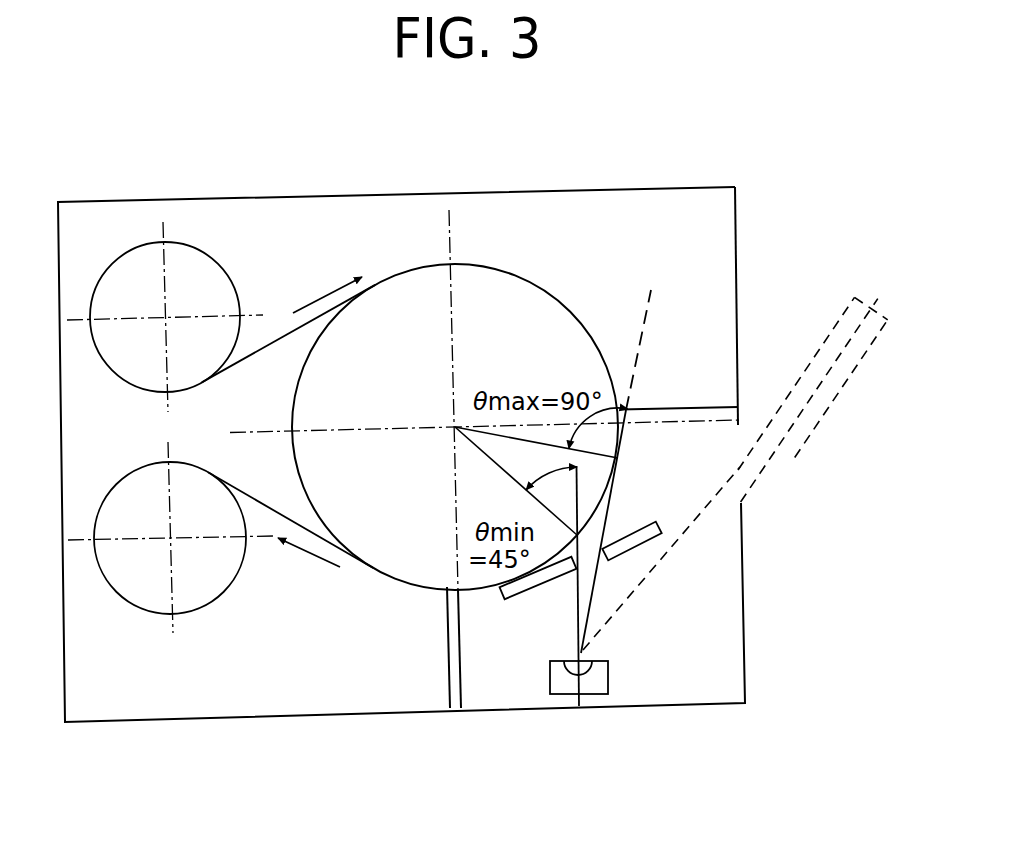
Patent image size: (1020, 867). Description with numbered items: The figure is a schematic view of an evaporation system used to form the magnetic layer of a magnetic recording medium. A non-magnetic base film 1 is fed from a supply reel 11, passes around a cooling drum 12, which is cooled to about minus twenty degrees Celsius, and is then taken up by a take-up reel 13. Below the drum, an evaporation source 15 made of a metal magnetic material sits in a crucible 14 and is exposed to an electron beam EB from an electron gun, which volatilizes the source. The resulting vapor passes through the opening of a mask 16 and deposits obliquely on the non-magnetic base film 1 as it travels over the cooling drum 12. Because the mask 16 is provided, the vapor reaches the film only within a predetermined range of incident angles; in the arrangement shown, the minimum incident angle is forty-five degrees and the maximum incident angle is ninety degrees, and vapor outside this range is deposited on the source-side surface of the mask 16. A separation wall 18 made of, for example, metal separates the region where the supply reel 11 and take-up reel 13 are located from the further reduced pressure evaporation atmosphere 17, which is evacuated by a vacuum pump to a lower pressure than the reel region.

The non-magnetic base film 1 is at (285, 332).
The supply reel 11 is at (118, 258).
The cooling drum 12 is at (520, 277).
The take-up reel 13 is at (130, 603).
The crucible 14 is at (608, 678).
The evaporation source 15 is at (576, 698).
The mask 16 is at (522, 592).
The evaporation atmosphere 17 is at (727, 663).
The separation wall 18 is at (697, 407).
The electron beam EB is at (797, 460).